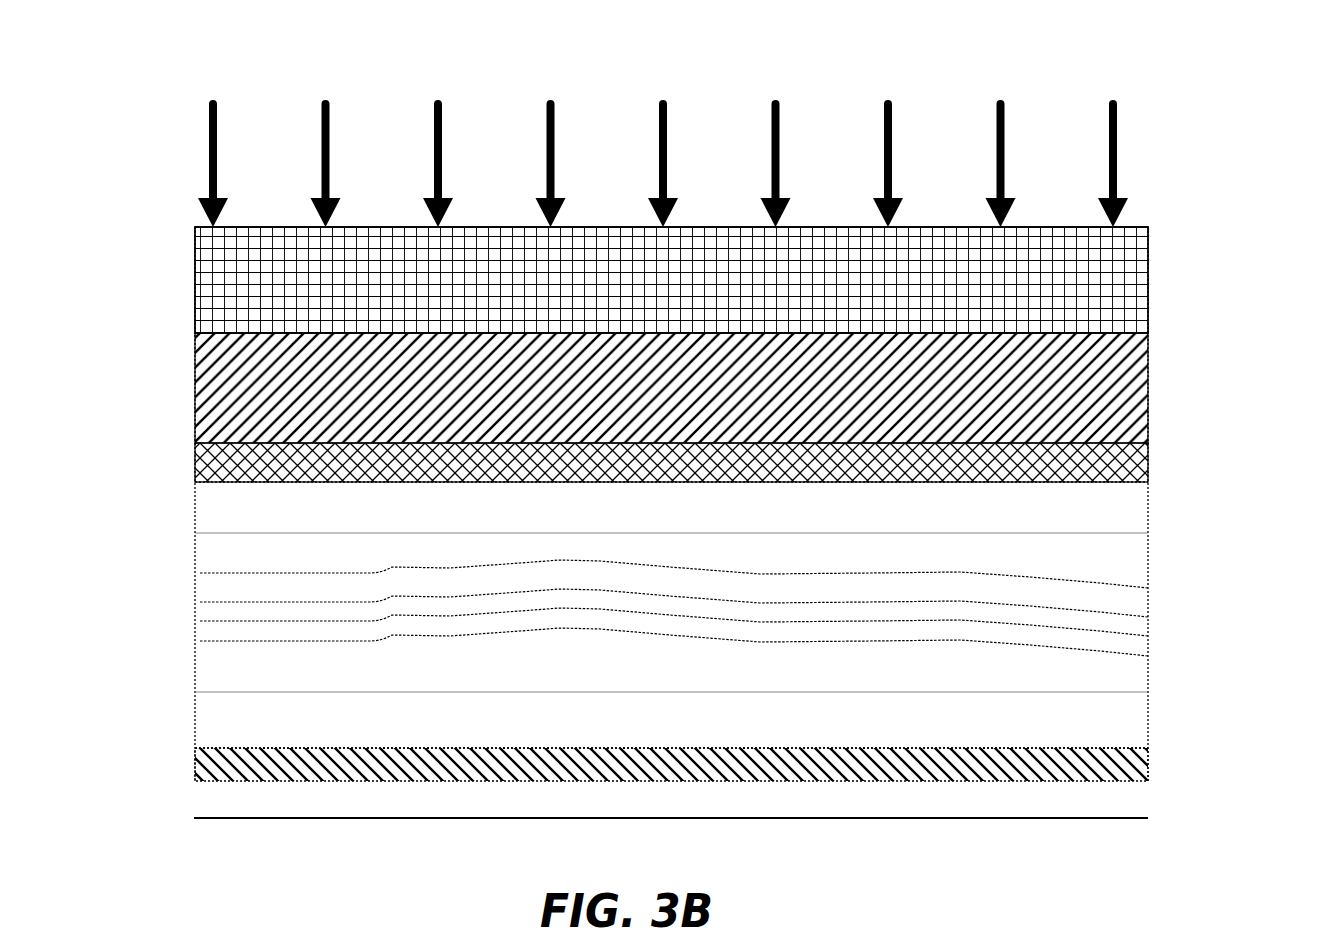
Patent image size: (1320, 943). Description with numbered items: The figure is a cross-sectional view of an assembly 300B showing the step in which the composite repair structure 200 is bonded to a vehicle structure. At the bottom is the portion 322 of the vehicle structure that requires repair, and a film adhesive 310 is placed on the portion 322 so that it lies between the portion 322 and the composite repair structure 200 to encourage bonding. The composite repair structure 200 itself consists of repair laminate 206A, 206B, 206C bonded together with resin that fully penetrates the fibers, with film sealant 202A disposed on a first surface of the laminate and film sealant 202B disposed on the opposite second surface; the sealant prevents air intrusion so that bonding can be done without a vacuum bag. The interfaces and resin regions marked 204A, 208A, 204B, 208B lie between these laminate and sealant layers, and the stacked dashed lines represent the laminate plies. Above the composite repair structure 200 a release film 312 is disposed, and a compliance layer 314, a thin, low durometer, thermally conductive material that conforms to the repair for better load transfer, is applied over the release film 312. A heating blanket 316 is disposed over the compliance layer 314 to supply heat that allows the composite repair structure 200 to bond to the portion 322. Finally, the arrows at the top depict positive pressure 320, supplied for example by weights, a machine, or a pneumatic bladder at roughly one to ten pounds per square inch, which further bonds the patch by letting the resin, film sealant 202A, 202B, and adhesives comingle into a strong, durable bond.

The assembly 300B is at (132, 101).
The positive pressure 320 is at (1005, 108).
The heating blanket 316 is at (1110, 287).
The compliance layer 314 is at (1040, 440).
The release film 312 is at (1070, 468).
The composite repair structure 200 is at (1150, 447).
The film sealant 202A is at (1113, 510).
The first interface 204A is at (235, 533).
The first buffer region 208A is at (1130, 560).
The repair laminate 206A is at (1132, 600).
The repair laminate 206B is at (1135, 625).
The repair laminate 206C is at (1135, 649).
The second interface 204B is at (1028, 692).
The second buffer region 208B is at (1140, 678).
The film sealant 202B is at (1130, 715).
The film adhesive 310 is at (1113, 770).
The portion 322 is at (855, 797).